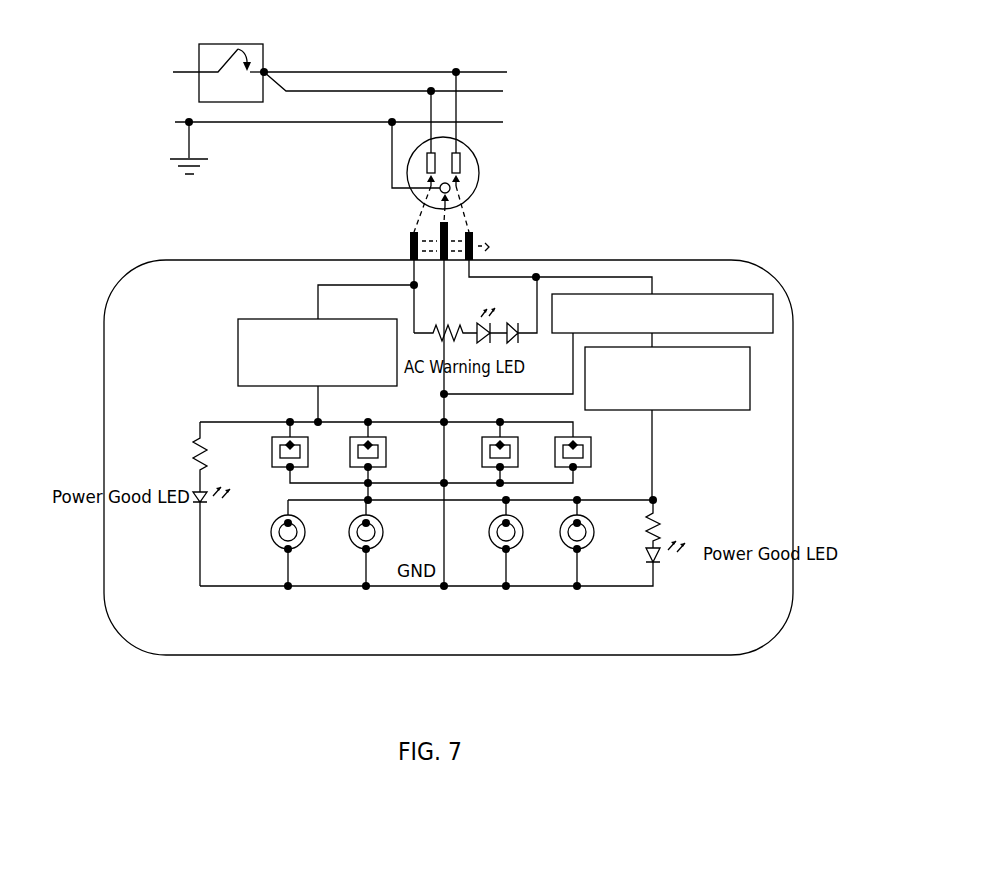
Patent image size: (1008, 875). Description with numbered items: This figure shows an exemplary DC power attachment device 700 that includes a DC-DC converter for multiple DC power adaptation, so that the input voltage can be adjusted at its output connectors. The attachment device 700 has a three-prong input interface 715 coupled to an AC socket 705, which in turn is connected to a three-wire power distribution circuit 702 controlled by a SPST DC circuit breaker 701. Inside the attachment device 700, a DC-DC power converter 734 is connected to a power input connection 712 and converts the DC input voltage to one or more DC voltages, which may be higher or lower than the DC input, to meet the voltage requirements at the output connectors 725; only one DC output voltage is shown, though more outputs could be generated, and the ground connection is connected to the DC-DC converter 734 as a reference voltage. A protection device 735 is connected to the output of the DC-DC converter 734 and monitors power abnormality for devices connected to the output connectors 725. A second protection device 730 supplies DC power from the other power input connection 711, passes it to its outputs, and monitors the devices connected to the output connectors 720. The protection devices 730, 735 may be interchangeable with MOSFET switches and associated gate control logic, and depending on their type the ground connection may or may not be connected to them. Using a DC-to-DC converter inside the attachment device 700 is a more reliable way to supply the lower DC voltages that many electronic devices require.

The SPST DC circuit breaker 701 is at (260, 57).
The three-wire power distribution circuit 702 is at (527, 72).
The AC socket 705 is at (480, 163).
The DC power attachment device 700 is at (588, 259).
The 3-prong input interface 715 is at (398, 251).
The power input connection 711 is at (336, 283).
The power input connection 712 is at (638, 276).
The DC-DC power converter 734 is at (662, 320).
The protection device 730 is at (317, 370).
The protection device 735 is at (667, 423).
The output connectors 720 is at (272, 442).
The output connectors 725 is at (590, 521).